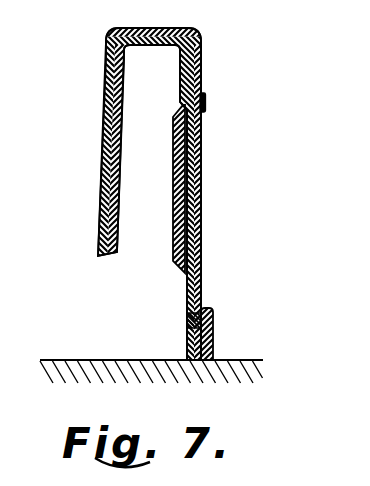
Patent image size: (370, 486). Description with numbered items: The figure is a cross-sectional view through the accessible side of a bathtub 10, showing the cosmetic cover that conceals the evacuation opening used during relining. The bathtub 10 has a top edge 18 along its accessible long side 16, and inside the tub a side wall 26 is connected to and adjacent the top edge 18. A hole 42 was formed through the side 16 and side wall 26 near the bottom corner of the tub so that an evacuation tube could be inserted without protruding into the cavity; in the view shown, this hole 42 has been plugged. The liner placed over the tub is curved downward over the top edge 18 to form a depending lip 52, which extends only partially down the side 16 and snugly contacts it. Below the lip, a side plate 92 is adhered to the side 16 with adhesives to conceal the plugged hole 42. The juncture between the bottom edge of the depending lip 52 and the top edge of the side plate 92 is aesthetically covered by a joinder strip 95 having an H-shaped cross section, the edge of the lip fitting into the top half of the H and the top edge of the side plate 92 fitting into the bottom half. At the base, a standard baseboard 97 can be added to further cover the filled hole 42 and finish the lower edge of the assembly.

The bathtub 10 is at (212, 236).
The top edge 18 is at (106, 46).
The side wall 26 is at (101, 146).
The side plate 92 is at (201, 175).
The depending lip 52 is at (201, 72).
The joinder strip 95 is at (205, 100).
The side 16 is at (173, 240).
The hole 42 is at (187, 320).
The baseboard 97 is at (213, 340).